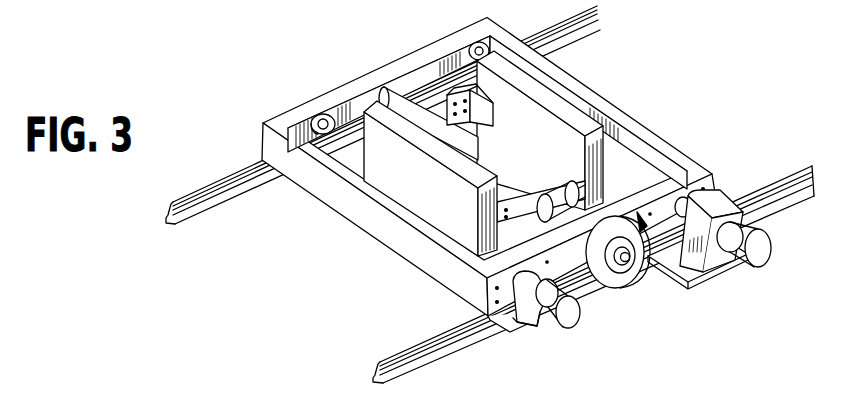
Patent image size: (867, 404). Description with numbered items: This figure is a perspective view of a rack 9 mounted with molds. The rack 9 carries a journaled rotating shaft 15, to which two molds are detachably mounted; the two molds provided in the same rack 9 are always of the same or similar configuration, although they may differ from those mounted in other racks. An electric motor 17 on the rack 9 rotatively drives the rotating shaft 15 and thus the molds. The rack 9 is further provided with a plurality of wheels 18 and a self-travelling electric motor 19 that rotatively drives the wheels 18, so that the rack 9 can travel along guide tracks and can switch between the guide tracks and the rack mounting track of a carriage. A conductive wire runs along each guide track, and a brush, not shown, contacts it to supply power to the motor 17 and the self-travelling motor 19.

The rack 9 is at (344, 203).
The rotating shaft 15 is at (507, 134).
The electric motor 17 is at (765, 250).
The wheel 18 is at (326, 121).
The self-travelling electric motor 19 is at (550, 322).